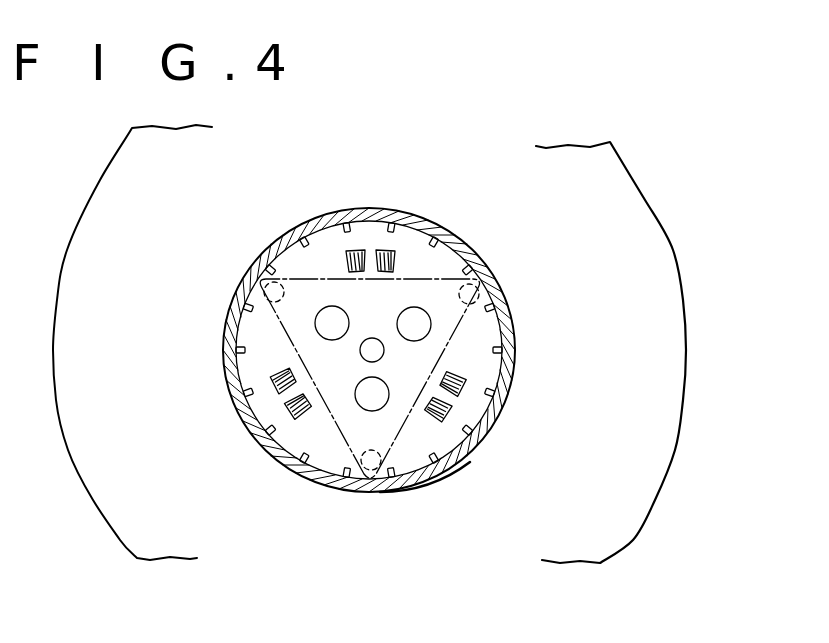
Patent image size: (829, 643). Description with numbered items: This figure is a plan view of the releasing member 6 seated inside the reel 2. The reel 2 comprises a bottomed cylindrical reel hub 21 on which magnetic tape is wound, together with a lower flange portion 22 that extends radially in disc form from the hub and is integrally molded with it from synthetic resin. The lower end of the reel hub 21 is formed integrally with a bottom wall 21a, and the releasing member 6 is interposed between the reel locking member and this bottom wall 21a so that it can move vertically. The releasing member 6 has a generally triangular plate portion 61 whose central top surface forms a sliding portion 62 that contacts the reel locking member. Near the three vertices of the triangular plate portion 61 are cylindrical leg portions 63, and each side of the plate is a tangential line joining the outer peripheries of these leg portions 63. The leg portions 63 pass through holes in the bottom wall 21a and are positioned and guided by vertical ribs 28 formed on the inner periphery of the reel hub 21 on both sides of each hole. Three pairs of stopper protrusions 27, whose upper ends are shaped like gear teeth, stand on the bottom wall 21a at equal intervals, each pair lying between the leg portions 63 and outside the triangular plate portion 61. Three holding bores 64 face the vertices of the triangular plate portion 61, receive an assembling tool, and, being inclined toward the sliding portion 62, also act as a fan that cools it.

The reel 2 is at (100, 180).
The lower flange portion 22 is at (636, 188).
The releasing member 6 is at (300, 268).
The reel hub 21 is at (450, 216).
The bottom wall 21a is at (456, 446).
The stopper protrusions 27 is at (390, 250).
The vertical ribs 28 is at (468, 247).
The triangular plate portion 61 is at (246, 353).
The sliding portion 62 is at (360, 352).
The leg portions 63 is at (266, 284).
The holding bores 64 is at (350, 324).